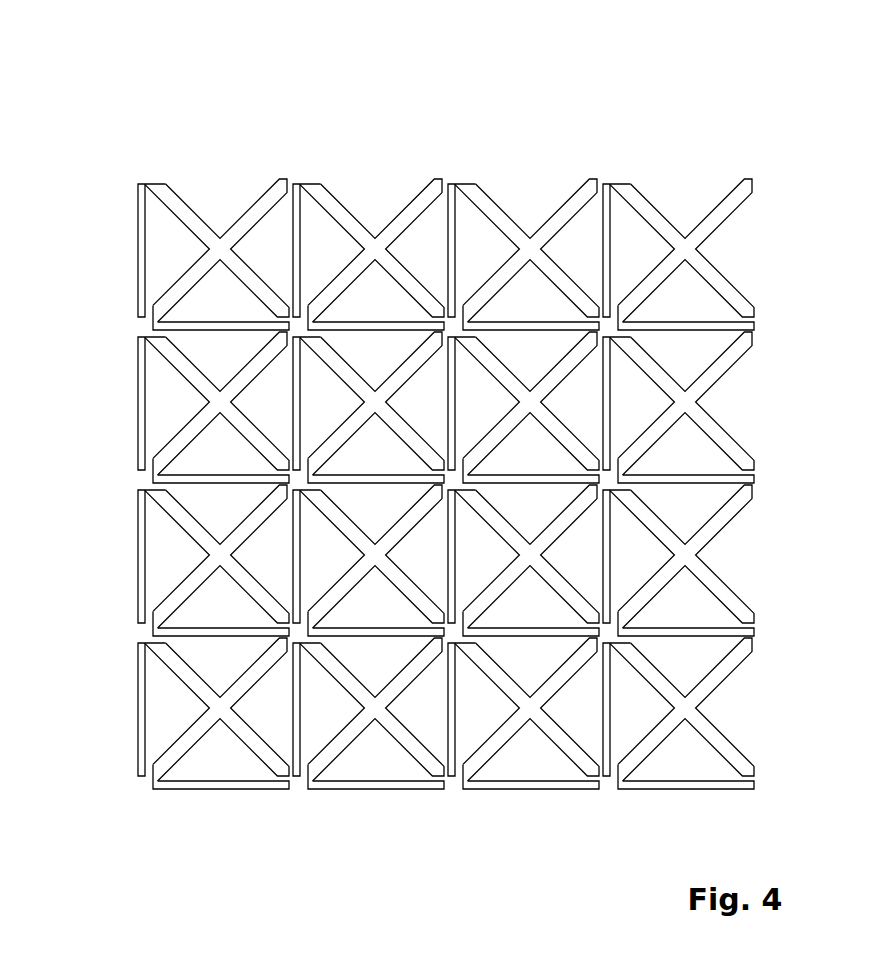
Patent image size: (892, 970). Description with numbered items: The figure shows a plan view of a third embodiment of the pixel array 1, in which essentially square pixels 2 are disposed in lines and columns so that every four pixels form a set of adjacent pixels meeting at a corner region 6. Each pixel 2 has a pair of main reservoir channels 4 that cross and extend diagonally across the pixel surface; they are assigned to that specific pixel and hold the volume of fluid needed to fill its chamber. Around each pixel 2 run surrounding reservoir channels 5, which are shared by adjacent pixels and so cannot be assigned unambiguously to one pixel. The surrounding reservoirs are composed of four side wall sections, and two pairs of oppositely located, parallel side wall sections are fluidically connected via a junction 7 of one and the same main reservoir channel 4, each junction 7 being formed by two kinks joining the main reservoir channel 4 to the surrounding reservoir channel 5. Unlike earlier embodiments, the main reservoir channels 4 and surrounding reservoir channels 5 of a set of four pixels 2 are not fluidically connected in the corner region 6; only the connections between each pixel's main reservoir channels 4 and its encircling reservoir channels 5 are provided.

The lattice structure 1 is at (584, 66).
The pixel 2 is at (227, 166).
The main reservoir channel 4 is at (186, 226).
The surrounding reservoir channel 5 is at (285, 179).
The corner region 6 is at (464, 289).
The junction 7 is at (143, 184).